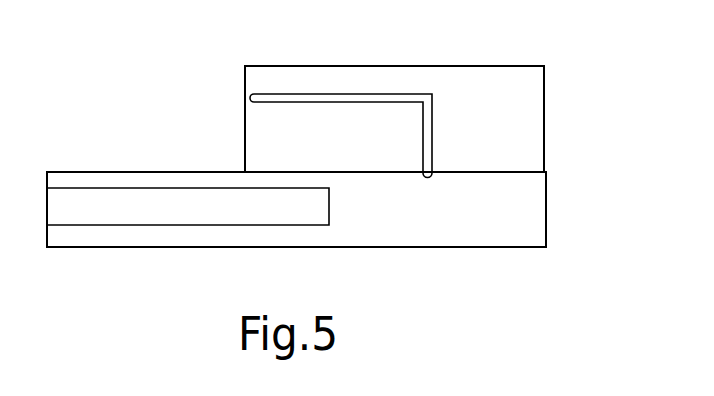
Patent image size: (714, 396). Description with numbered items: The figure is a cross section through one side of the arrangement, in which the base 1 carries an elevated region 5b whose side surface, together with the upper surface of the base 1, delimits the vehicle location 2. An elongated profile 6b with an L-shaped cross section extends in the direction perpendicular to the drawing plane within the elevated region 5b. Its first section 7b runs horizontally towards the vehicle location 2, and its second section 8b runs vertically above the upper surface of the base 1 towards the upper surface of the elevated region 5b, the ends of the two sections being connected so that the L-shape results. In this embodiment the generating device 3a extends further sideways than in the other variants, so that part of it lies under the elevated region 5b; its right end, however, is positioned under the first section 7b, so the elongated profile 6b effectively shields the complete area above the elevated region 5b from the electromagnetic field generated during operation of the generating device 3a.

The base 1 is at (338, 233).
The vehicle location 2 is at (127, 125).
The generating device 3a is at (152, 203).
The elevated region 5b is at (544, 112).
The elongated profile 6b is at (310, 93).
The first section 7b is at (397, 100).
The second section 8b is at (432, 135).